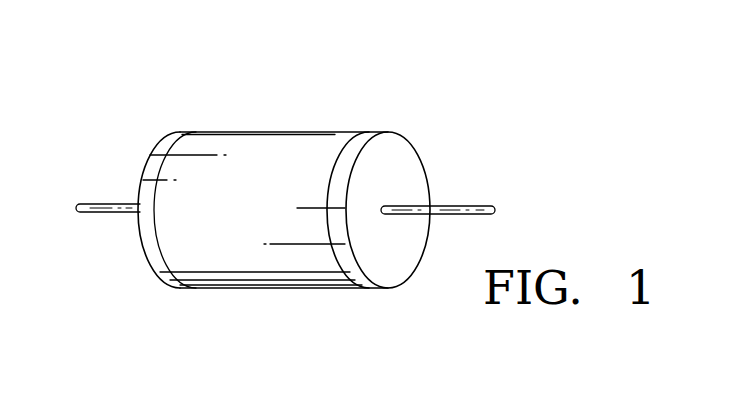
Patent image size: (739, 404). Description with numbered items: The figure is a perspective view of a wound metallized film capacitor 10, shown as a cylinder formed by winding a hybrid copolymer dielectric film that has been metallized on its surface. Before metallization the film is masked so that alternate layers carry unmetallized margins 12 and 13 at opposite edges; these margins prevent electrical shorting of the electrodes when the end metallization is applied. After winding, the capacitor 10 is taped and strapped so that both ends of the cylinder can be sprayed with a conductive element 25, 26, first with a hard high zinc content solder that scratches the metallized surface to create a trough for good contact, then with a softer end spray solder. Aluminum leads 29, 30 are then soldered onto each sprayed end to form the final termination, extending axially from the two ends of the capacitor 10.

The capacitor 10 is at (284, 94).
The unmetallized margin 12 is at (349, 153).
The unmetallized margin 13 is at (162, 152).
The conductive element 25 is at (393, 162).
The conductive element 26 is at (142, 243).
The aluminum lead 29 is at (465, 206).
The aluminum lead 30 is at (96, 206).